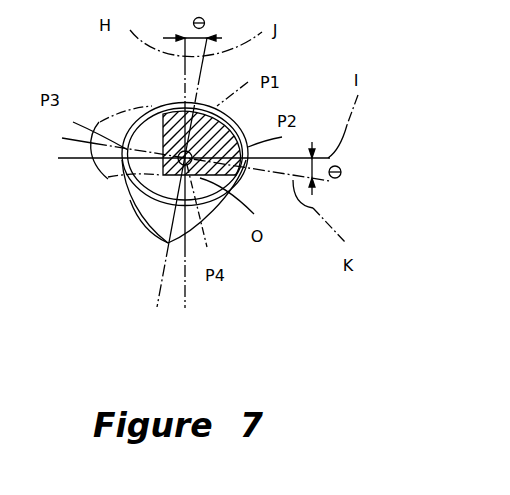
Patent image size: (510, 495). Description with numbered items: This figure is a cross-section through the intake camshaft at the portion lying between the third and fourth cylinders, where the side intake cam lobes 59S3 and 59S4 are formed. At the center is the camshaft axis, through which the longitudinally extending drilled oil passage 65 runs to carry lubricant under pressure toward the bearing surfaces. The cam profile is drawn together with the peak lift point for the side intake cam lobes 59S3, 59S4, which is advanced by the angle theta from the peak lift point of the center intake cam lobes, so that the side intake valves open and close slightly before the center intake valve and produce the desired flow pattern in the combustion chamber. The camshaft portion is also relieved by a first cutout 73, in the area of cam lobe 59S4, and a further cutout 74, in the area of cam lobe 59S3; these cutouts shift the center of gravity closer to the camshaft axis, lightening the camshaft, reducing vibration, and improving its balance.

The further cutout 74 is at (137, 116).
The first cutout 73 is at (222, 188).
The drilled oil passage 65 is at (188, 203).
The side intake cam lobe 59S3 is at (117, 155).
The side intake cam lobe 59S4 is at (163, 223).